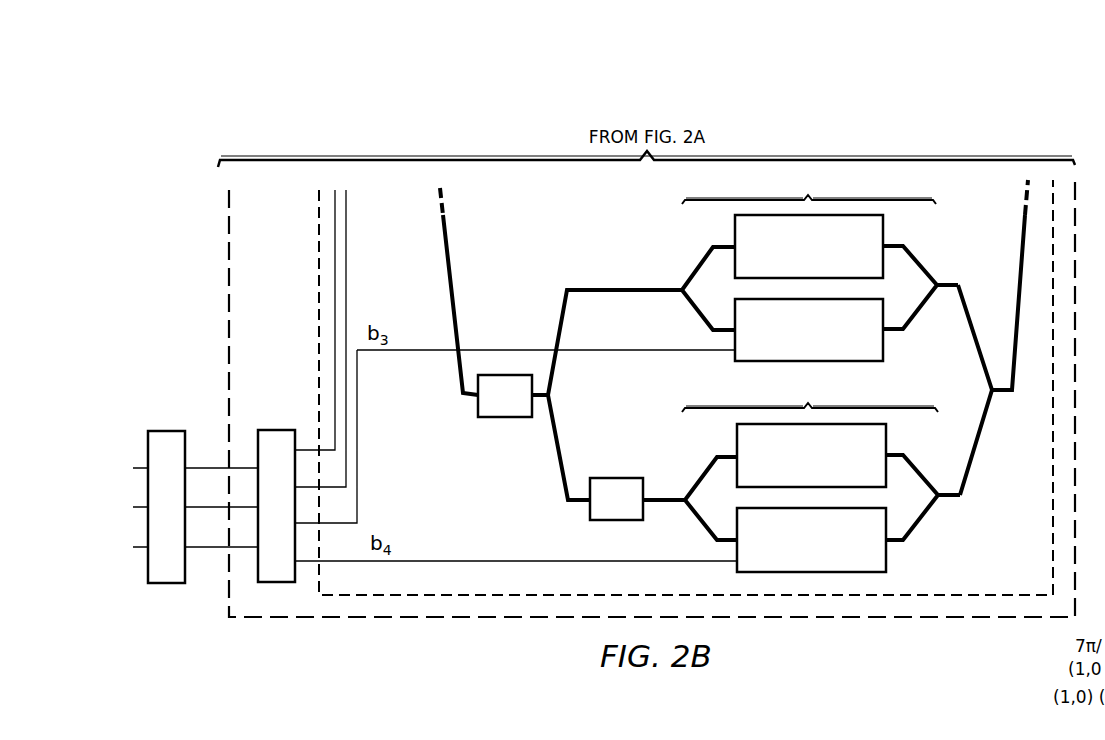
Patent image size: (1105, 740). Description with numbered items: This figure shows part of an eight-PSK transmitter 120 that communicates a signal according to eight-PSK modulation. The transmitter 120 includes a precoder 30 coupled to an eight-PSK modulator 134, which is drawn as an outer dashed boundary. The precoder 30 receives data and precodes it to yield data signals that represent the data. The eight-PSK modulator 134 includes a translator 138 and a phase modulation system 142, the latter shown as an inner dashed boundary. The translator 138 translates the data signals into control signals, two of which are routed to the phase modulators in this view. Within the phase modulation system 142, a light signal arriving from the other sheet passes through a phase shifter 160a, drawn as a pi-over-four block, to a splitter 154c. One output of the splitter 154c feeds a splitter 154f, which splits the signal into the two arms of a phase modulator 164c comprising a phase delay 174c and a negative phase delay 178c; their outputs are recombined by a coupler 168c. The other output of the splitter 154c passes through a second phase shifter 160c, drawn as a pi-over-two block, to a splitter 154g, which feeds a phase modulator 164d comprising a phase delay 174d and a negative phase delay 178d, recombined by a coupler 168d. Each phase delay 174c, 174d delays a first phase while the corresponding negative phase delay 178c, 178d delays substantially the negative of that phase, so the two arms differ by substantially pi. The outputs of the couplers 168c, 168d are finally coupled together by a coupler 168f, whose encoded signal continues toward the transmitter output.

The 8-PSK transmitter 120 is at (183, 257).
The 8-PSK modulator 134 is at (221, 304).
The phase modulation system 142 is at (311, 304).
The precoder 30 is at (163, 430).
The translator 138 is at (278, 430).
The phase shifter 160a is at (500, 418).
The splitter 154c is at (553, 393).
The splitter 154f is at (680, 286).
The phase modulator 164c is at (822, 269).
The phase delay 174c is at (886, 232).
The coupler 168c is at (962, 262).
The negative phase delay 178c is at (886, 343).
The phase shifter 160c is at (615, 478).
The splitter 154g is at (683, 492).
The phase modulator 164d is at (824, 479).
The phase delay 174d is at (888, 443).
The coupler 168d is at (942, 497).
The negative phase delay 178d is at (888, 555).
The coupler 168f is at (997, 395).